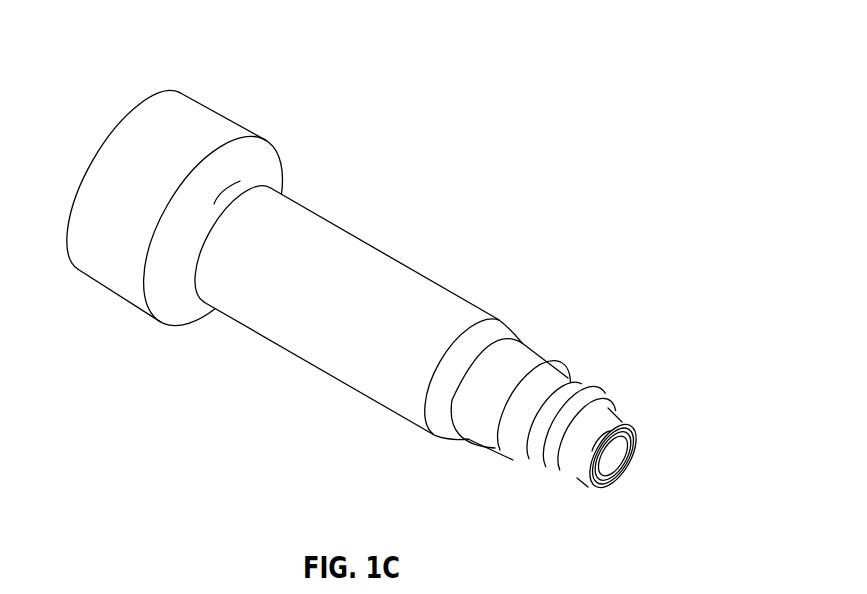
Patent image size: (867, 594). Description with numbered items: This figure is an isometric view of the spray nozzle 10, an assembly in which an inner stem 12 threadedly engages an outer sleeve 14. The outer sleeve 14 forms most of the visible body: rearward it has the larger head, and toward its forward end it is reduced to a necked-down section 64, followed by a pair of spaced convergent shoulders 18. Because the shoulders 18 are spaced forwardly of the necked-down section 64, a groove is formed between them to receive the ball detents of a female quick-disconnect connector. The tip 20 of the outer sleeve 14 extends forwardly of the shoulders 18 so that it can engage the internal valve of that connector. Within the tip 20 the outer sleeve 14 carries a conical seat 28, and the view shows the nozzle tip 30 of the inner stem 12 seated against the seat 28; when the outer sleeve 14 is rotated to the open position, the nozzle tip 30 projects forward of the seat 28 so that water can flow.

The nozzle 10 is at (534, 115).
The inner stem 12 is at (228, 185).
The outer sleeve 14 is at (365, 322).
The necked-down section 64 is at (523, 358).
The convergent shoulders 18 is at (593, 383).
The tip 20 is at (612, 410).
The conical seat 28 is at (617, 487).
The nozzle tip 30 is at (617, 458).